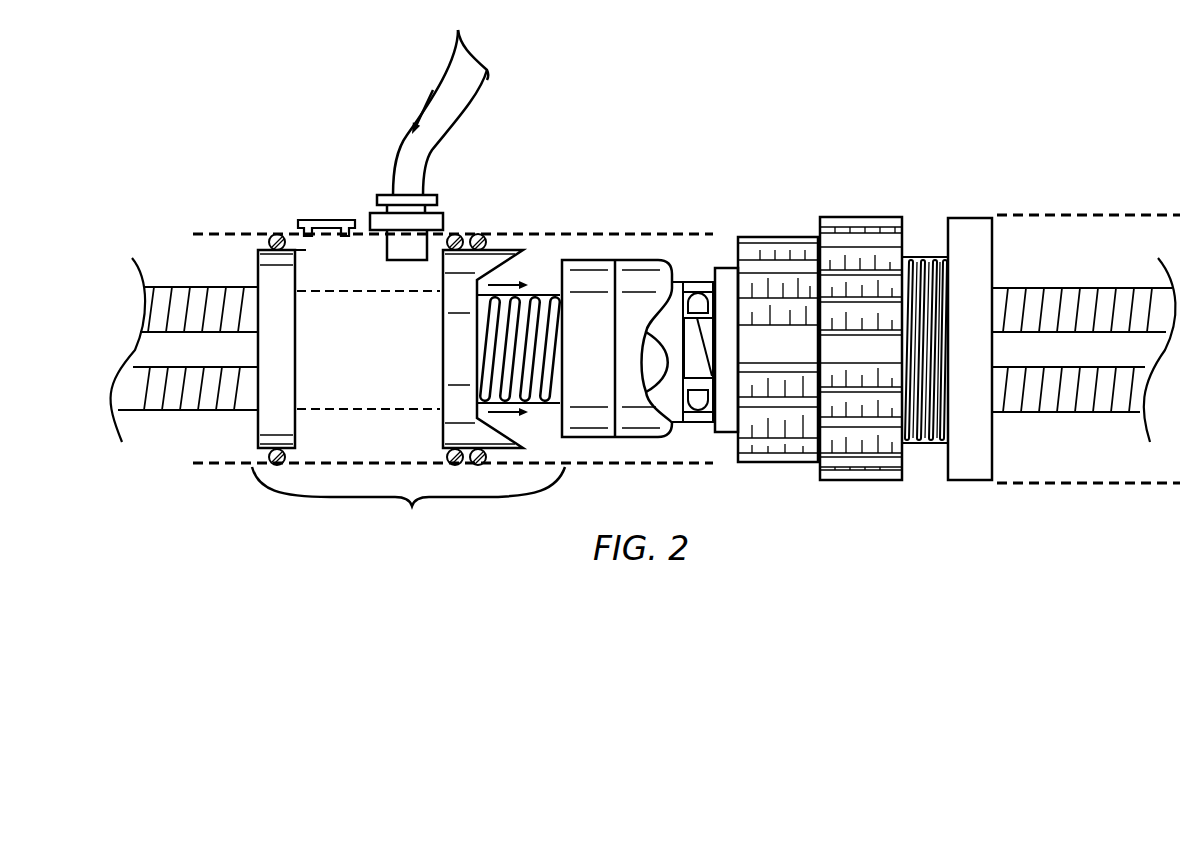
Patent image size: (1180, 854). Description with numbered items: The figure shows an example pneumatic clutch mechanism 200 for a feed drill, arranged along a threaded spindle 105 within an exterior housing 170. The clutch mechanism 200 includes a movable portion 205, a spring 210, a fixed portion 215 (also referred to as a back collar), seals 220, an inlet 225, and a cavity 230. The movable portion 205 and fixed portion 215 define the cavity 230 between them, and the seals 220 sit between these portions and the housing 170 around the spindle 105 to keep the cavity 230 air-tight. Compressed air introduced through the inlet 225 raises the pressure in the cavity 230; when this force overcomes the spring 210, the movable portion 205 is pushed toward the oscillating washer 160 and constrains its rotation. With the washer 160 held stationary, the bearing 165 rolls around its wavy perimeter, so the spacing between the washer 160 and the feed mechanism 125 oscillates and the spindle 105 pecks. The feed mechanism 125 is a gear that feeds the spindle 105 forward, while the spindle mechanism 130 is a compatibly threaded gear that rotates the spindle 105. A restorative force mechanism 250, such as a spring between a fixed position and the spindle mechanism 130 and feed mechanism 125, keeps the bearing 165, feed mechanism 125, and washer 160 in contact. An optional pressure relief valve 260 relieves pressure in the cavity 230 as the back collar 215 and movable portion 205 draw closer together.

The spindle 105 is at (200, 287).
The feed mechanism 125 is at (755, 236).
The spindle mechanism 130 is at (840, 217).
The oscillating washer 160 is at (639, 437).
The bearing 165 is at (693, 422).
The exterior housing 170 is at (660, 233).
The pneumatic clutch mechanism 200 is at (408, 501).
The movable portion 205 is at (445, 428).
The spring 210 is at (544, 295).
The fixed portion 215 is at (257, 424).
The seals 220 is at (267, 236).
The inlet 225 is at (418, 248).
The cavity 230 is at (301, 246).
The restorative force mechanism 250 is at (925, 257).
The pressure relief valve 260 is at (341, 220).